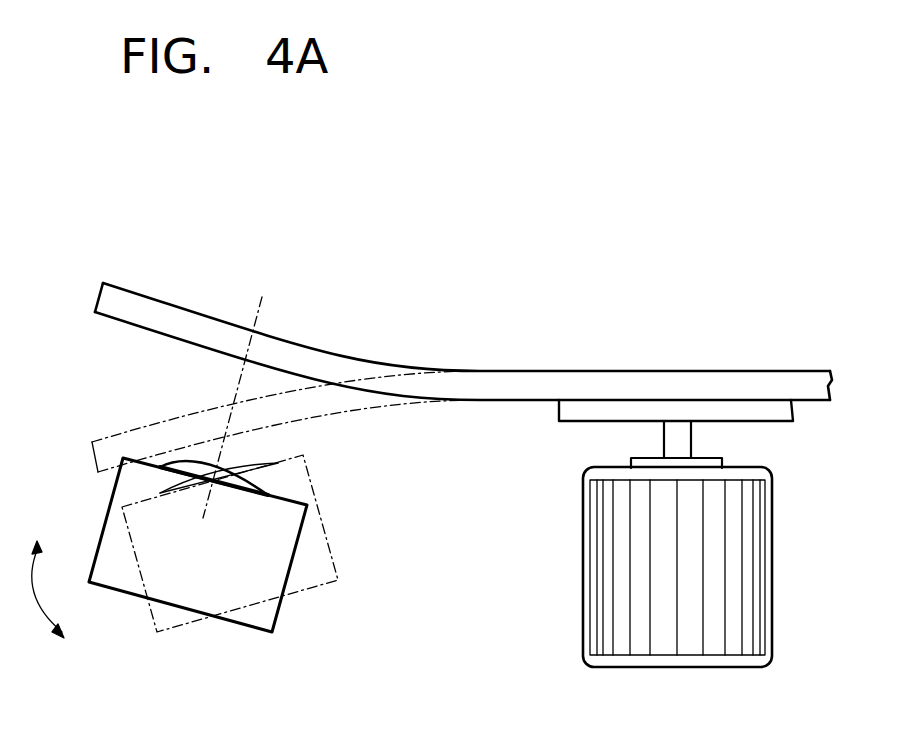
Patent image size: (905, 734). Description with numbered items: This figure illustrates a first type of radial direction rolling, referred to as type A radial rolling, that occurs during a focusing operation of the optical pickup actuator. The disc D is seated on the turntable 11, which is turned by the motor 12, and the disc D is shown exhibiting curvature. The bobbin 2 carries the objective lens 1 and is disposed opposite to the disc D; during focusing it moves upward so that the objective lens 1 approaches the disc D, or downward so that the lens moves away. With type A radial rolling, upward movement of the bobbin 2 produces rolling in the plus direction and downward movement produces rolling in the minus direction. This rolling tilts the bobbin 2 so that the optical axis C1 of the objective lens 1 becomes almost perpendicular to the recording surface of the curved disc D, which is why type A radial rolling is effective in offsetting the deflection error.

The objective lens 1 is at (187, 463).
The bobbin 2 is at (112, 543).
The optical axis C1 is at (257, 312).
The disc D is at (358, 365).
The turntable 11 is at (565, 408).
The motor 12 is at (582, 557).